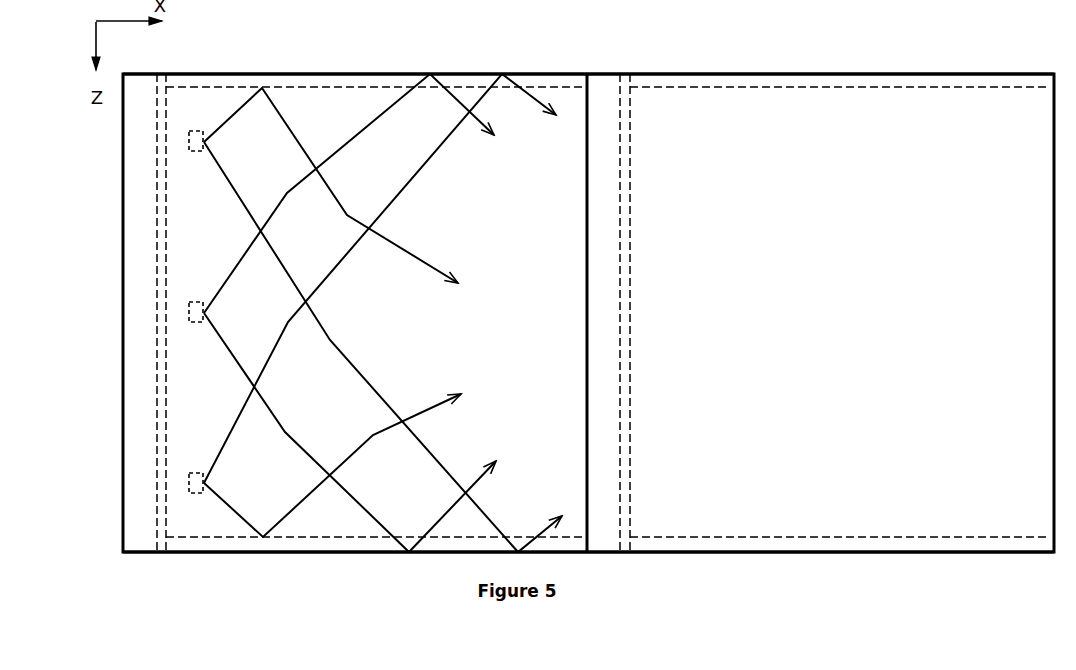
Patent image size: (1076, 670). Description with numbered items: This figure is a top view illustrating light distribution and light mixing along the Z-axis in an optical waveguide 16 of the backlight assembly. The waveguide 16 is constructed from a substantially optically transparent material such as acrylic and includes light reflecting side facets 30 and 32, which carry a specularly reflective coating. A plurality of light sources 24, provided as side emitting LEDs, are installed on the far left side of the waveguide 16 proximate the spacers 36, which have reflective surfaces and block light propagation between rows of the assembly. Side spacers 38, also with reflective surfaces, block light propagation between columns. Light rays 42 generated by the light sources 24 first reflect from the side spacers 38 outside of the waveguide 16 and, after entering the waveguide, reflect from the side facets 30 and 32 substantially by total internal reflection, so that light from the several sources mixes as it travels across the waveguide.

The optical waveguide 16 is at (800, 56).
The light sources 24 is at (189, 141).
The light reflecting side facet 30 is at (392, 552).
The light reflecting side facet 32 is at (355, 74).
The spacers 36 is at (135, 87).
The side spacers 38 is at (518, 85).
The light rays 42 is at (355, 137).